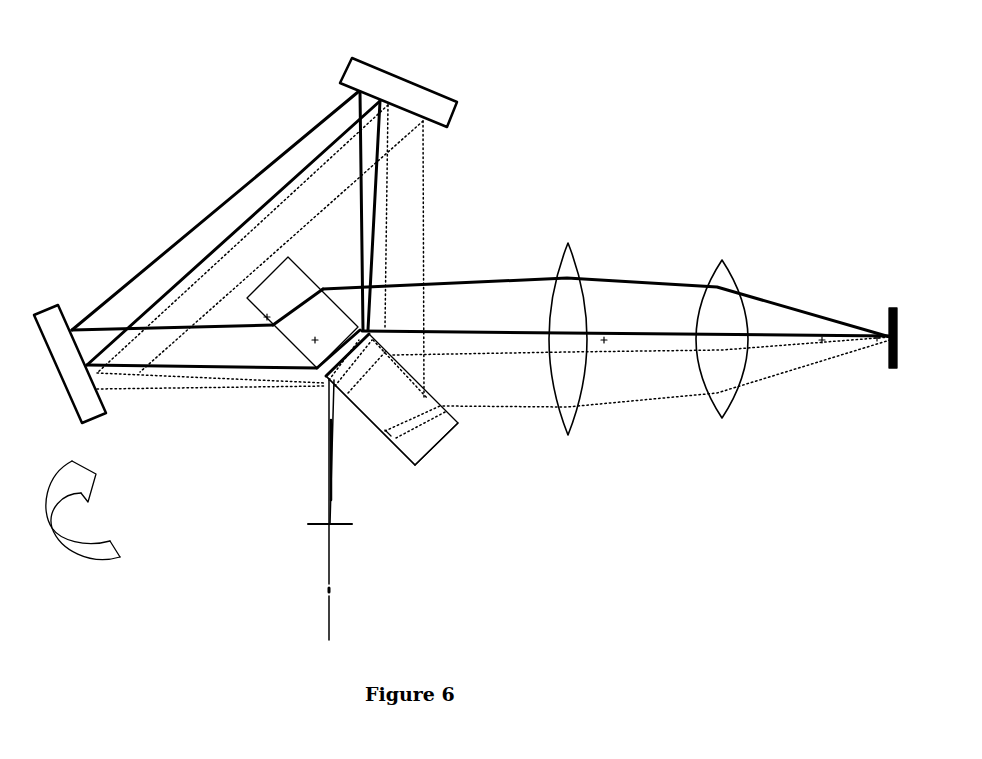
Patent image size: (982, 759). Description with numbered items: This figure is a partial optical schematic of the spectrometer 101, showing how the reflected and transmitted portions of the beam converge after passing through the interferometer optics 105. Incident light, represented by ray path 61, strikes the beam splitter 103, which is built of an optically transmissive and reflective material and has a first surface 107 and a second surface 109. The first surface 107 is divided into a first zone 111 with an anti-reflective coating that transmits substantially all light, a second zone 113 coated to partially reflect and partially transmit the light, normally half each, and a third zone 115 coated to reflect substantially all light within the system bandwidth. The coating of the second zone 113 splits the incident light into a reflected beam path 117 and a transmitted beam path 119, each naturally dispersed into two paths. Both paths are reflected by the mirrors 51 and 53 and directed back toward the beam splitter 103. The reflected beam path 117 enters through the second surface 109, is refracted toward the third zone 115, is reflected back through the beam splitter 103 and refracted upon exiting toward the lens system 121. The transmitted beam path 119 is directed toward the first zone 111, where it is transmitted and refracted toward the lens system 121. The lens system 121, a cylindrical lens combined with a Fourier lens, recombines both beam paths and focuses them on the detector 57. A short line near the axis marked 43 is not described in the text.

The interferometer optics 105 is at (335, 73).
The mirror 53 is at (398, 92).
The transmitted beam path 119 is at (364, 150).
The second surface 109 is at (298, 256).
The first zone 111 is at (284, 346).
The second zone 113 is at (323, 385).
The third zone 115 is at (353, 411).
The beam splitter 103 is at (420, 433).
The first surface 107 is at (413, 470).
The downward beam 43 is at (327, 517).
The ray path 61 is at (323, 590).
The reflected beam path 117 is at (143, 379).
The mirror 51 is at (70, 364).
The spectrometer 101 is at (104, 511).
The lens system 121 is at (723, 260).
The detector 57 is at (890, 306).